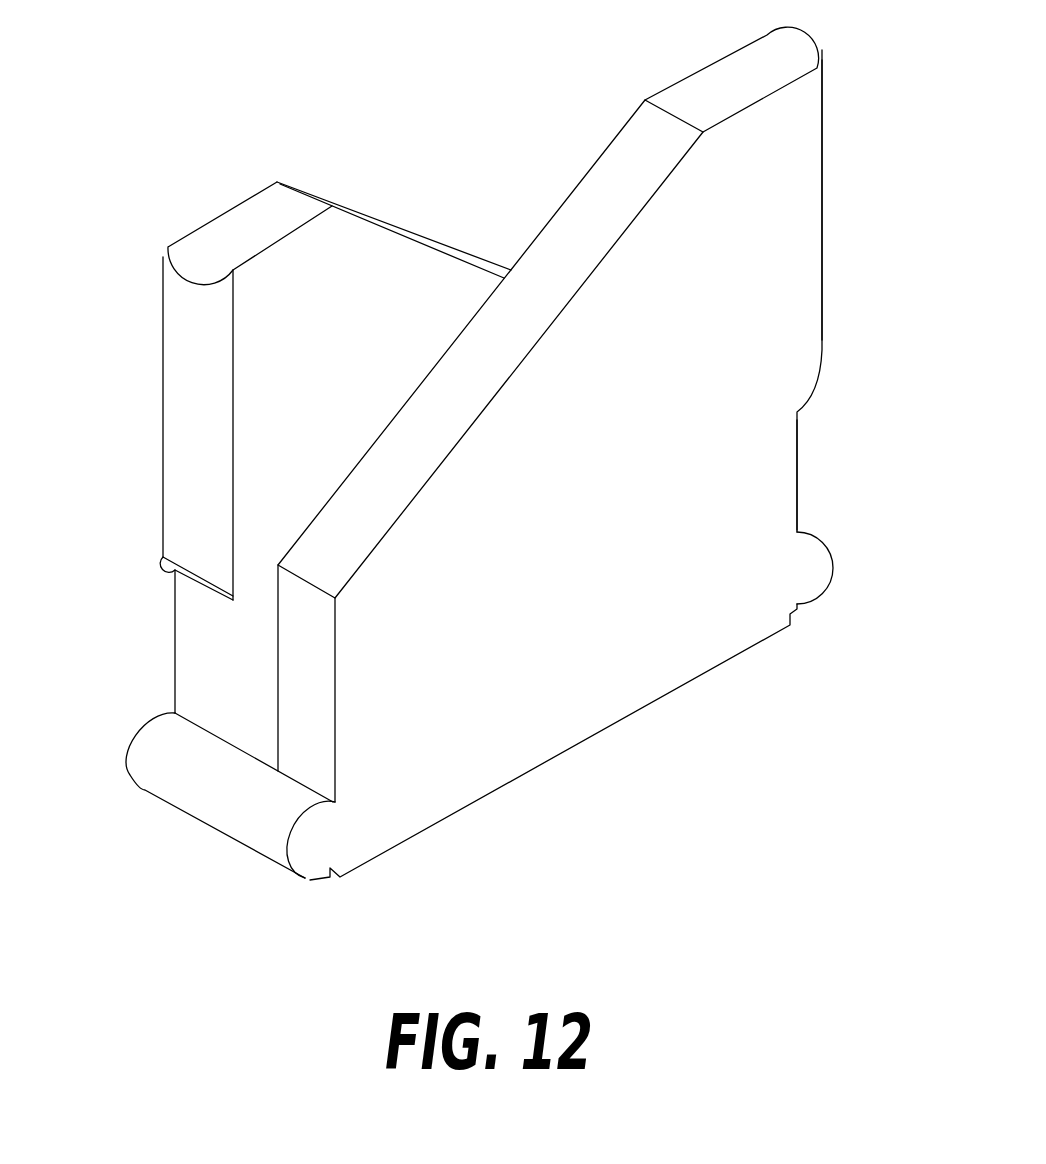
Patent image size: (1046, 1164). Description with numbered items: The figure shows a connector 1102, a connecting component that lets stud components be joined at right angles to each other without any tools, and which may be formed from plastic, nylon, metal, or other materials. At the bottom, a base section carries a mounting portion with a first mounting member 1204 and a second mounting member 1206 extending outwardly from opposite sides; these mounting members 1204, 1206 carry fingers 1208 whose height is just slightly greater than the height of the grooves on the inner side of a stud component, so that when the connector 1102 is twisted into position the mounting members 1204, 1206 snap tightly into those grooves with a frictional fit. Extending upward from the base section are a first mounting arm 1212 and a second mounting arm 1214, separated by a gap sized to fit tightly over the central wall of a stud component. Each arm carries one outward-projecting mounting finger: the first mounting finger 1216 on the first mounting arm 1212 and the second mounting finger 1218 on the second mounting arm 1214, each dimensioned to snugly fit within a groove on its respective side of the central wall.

The connector 1102 is at (792, 185).
The first mounting member 1204 is at (363, 838).
The second mounting member 1206 is at (843, 578).
The fingers 1208 is at (215, 813).
The first mounting arm 1212 is at (190, 248).
The second mounting arm 1214 is at (807, 102).
The first mounting finger 1216 is at (185, 182).
The second mounting finger 1218 is at (823, 242).